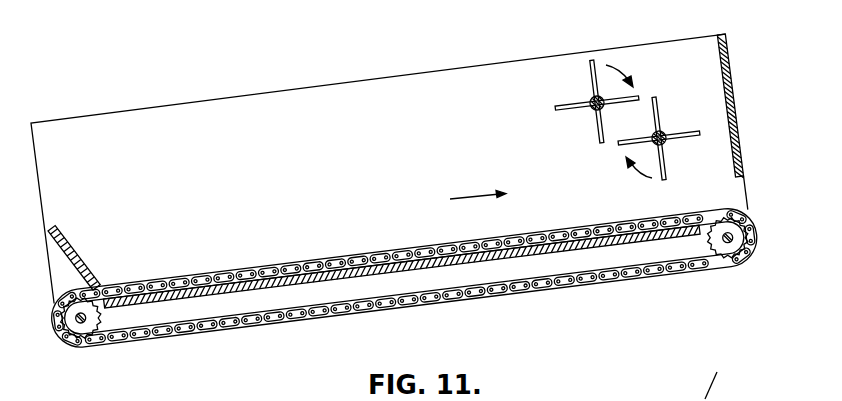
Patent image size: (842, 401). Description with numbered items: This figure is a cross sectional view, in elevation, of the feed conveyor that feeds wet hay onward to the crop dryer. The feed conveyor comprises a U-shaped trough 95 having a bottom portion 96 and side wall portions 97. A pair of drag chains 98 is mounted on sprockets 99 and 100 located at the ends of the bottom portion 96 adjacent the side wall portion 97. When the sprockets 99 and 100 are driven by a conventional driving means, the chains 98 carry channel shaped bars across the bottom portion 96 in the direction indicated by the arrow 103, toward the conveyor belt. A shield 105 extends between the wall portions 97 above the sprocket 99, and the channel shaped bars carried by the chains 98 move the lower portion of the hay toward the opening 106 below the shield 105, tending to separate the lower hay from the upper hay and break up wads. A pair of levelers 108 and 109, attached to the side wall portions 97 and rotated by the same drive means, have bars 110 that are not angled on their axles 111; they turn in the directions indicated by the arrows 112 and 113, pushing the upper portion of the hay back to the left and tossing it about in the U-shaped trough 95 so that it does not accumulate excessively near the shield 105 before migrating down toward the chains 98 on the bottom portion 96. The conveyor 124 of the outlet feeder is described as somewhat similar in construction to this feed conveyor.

The U-shaped trough 95 is at (260, 86).
The bottom portion 96 is at (434, 264).
The side wall portions 97 is at (275, 154).
The drag chains 98 is at (390, 313).
The sprocket 99 is at (735, 248).
The sprocket 100 is at (73, 327).
The arrow 103 is at (475, 197).
The shield 105 is at (735, 101).
The opening 106 is at (741, 191).
The leveler 108 is at (663, 133).
The leveler 109 is at (588, 70).
The bars 110 is at (567, 107).
The axles 111 is at (591, 111).
The arrow 112 is at (631, 66).
The arrow 113 is at (638, 175).
The conveyor 124 is at (728, 375).